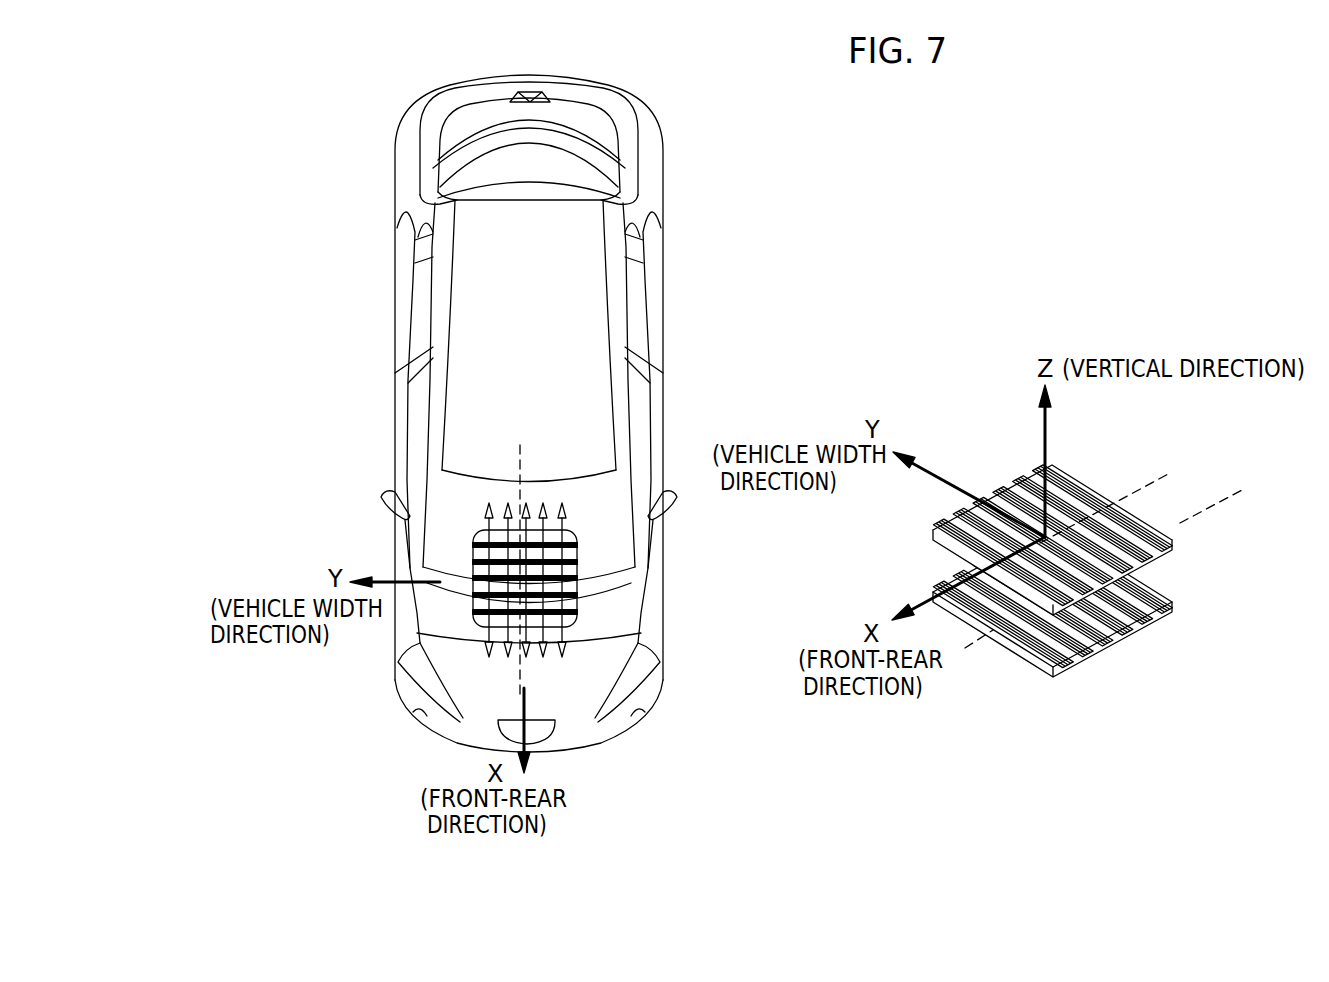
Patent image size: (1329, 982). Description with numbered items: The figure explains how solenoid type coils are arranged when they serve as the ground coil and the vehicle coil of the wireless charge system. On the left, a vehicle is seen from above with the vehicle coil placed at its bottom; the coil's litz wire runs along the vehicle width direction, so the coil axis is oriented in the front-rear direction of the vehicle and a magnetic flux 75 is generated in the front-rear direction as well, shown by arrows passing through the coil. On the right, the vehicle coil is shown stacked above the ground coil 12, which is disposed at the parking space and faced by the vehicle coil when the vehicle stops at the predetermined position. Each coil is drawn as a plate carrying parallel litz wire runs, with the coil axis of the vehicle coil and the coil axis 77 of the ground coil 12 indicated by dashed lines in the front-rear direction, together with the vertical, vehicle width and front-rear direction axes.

The ground coil 12 is at (1082, 660).
The magnetic flux 75 is at (487, 507).
The coil axis 77 is at (1242, 490).